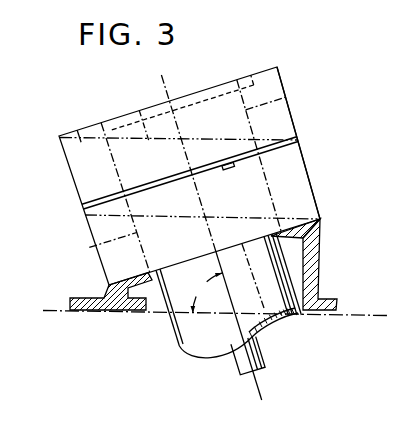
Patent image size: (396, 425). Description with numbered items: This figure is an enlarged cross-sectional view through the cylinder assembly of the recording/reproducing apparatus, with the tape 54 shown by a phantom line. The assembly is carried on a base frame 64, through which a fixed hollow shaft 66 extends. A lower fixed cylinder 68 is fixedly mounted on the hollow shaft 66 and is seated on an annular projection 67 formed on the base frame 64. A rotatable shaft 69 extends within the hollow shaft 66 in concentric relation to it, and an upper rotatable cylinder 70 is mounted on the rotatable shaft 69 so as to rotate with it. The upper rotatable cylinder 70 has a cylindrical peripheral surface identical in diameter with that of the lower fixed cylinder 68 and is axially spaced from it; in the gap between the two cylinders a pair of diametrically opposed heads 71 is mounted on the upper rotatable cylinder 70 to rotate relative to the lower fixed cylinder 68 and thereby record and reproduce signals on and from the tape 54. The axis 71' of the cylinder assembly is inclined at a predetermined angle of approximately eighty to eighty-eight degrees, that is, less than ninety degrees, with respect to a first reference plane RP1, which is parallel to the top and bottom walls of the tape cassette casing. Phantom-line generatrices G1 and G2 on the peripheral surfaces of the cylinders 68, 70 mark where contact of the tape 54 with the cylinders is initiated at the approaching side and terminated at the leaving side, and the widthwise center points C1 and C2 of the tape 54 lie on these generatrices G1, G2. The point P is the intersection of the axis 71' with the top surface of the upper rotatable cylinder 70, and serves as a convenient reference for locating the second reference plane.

The tape 54 is at (143, 107).
The lower fixed cylinder 68 is at (313, 191).
The upper rotatable cylinder 70 is at (290, 111).
The heads 71 is at (190, 173).
The annular projection 67 is at (312, 264).
The base frame 64 is at (112, 303).
The fixed hollow shaft 66 is at (180, 349).
The rotatable shaft 69 is at (266, 349).
The axis of the cylinder assembly 71' is at (262, 330).
The intersection P is at (170, 100).
The center point C1 is at (118, 175).
The center point C2 is at (267, 177).
The generatrix G1 is at (100, 244).
The generatrix G2 is at (281, 99).
The first reference plane RP1 is at (43, 313).